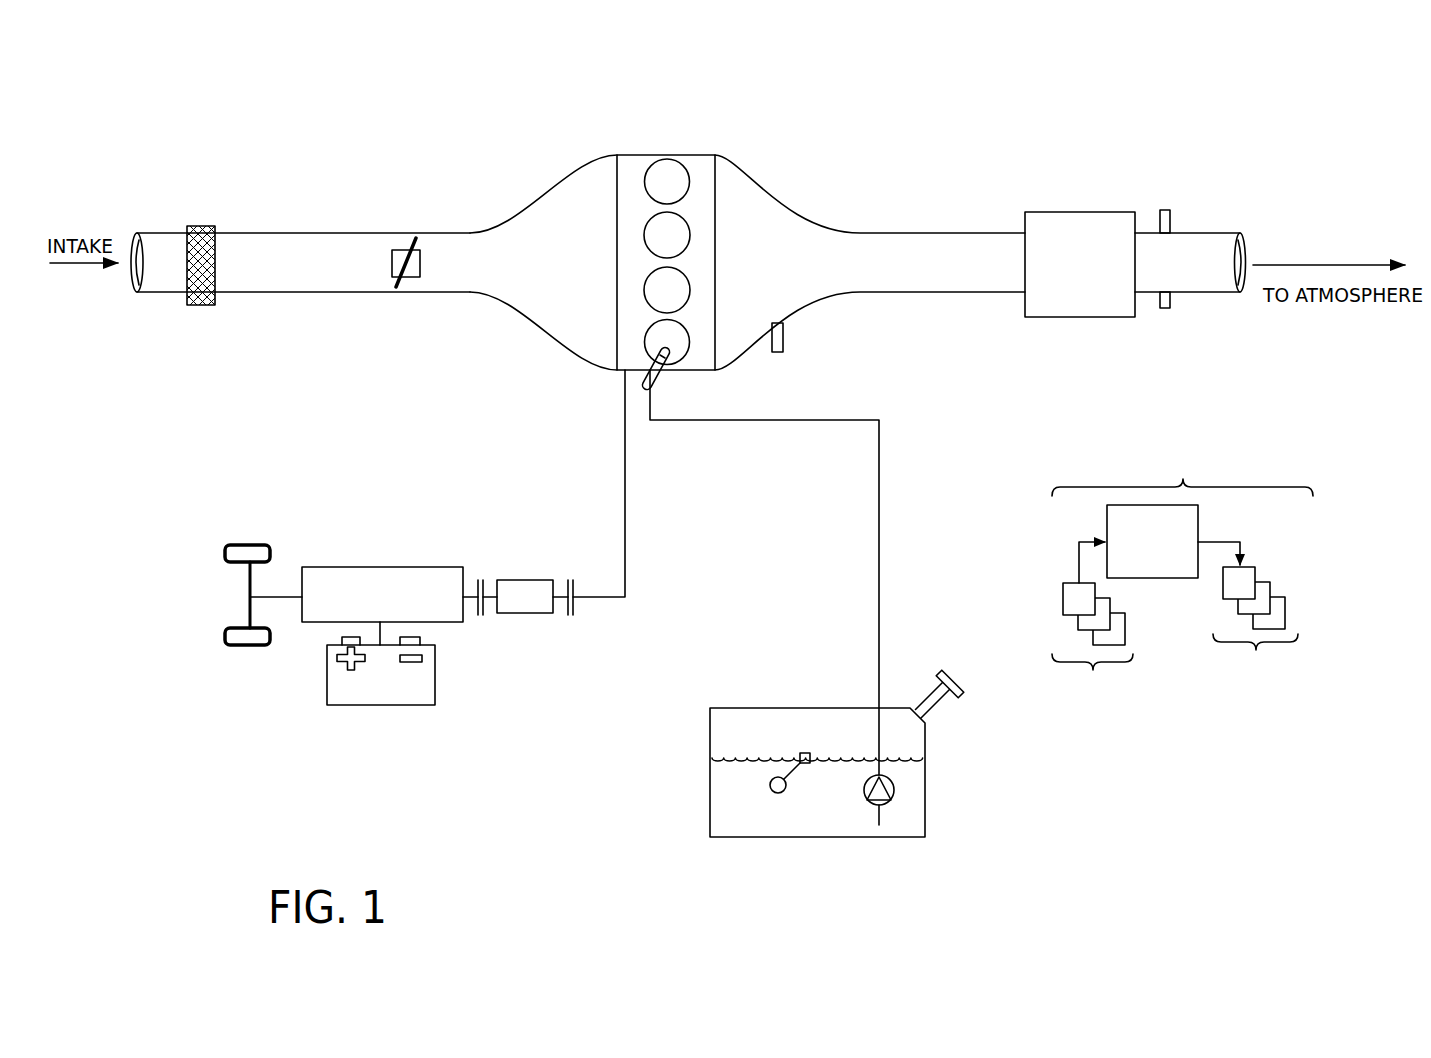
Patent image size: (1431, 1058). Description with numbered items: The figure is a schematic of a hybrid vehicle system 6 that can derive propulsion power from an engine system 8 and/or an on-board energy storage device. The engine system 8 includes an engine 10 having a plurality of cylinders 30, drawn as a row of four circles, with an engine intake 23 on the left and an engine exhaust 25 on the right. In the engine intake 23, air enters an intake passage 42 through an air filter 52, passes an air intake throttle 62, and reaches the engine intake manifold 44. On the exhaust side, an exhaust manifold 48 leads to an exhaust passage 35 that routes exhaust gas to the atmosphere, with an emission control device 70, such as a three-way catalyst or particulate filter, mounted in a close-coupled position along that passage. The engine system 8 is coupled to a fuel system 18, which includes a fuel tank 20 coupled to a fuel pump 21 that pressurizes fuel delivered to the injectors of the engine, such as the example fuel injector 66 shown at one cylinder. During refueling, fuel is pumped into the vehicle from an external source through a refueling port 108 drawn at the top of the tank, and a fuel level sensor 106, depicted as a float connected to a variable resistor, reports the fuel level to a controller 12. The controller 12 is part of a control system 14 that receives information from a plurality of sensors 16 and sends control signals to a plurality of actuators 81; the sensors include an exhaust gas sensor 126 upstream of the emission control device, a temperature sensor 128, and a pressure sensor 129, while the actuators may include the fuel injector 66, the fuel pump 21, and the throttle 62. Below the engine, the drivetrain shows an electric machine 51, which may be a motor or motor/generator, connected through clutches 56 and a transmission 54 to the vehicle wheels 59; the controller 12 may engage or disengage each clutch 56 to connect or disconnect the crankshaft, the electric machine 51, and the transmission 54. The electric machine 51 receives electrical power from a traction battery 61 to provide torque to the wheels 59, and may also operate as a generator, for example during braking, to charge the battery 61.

The hybrid vehicle system 6 is at (153, 133).
The engine system 8 is at (1272, 130).
The engine 10 is at (715, 243).
The controller 12 is at (1152, 541).
The control system 14 is at (1182, 463).
The sensors 16 is at (1092, 625).
The fuel system 18 is at (966, 860).
The fuel tank 20 is at (710, 836).
The fuel pump 21 is at (894, 797).
The engine intake 23 is at (540, 185).
The engine exhaust 25 is at (830, 193).
The cylinders 30 is at (687, 173).
The exhaust passage 35 is at (1217, 232).
The intake passage 42 is at (165, 292).
The engine intake manifold 44 is at (578, 274).
The exhaust manifold 48 is at (796, 274).
The electric machine 51 is at (528, 615).
The air filter 52 is at (205, 226).
The transmission 54 is at (325, 625).
The clutches 56 is at (485, 585).
The vehicle wheels 59 is at (245, 648).
The traction battery 61 is at (385, 706).
The air intake throttle 62 is at (420, 275).
The fuel injector 66 is at (658, 373).
The emission control device 70 is at (1068, 212).
The actuators 81 is at (1248, 617).
The fuel level sensor 106 is at (808, 752).
The refueling port 108 is at (950, 672).
The exhaust gas sensor 126 is at (783, 328).
The temperature sensor 128 is at (1166, 308).
The pressure sensor 129 is at (1166, 210).